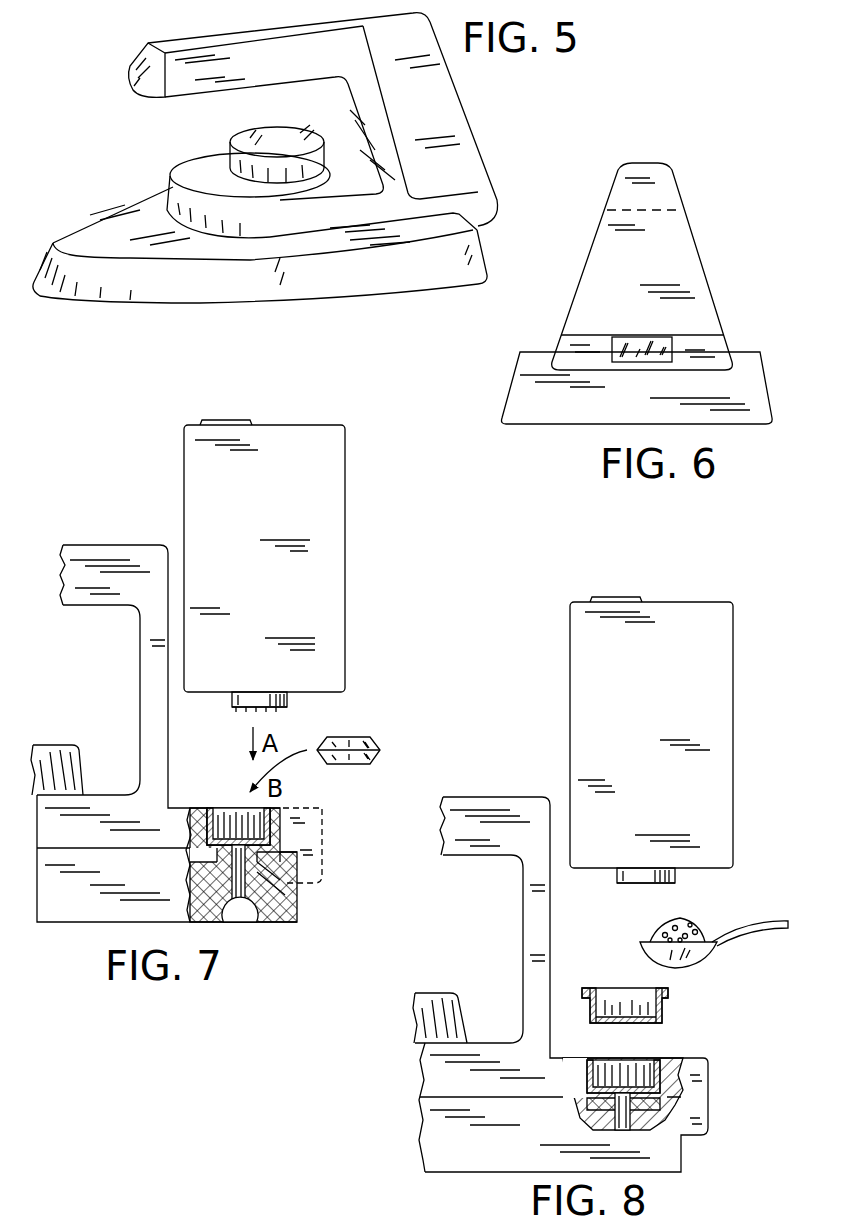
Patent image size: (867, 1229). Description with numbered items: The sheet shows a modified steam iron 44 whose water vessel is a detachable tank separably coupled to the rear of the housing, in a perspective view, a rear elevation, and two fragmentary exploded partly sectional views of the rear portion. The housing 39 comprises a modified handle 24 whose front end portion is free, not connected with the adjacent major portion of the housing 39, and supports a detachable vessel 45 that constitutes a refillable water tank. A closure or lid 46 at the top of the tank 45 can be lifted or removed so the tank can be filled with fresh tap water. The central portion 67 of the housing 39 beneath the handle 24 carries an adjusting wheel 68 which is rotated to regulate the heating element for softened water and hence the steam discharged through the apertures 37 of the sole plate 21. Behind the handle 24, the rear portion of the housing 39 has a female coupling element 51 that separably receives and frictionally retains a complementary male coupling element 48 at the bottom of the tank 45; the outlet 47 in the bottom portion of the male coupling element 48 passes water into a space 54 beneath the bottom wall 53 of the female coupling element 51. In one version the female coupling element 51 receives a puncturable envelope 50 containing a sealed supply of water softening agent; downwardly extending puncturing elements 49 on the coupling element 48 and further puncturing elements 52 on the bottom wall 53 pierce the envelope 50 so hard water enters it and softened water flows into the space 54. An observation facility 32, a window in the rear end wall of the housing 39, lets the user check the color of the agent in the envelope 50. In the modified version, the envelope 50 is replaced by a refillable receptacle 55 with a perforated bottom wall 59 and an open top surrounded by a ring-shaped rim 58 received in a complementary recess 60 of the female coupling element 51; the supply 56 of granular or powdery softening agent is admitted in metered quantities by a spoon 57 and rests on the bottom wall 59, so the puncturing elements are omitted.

In FIG. 7, the sole plate 21 is at (270, 906).
In FIG. 5, the handle 24 is at (176, 40).
In FIG. 6, the observation facility 32 is at (672, 340).
In FIG. 7, the observation facility 32 is at (330, 812).
In FIG. 7, the apertures 37 is at (242, 917).
In FIG. 5, the housing 39 is at (478, 208).
In FIG. 6, the housing 39 is at (713, 350).
In FIG. 7, the housing 39 is at (328, 854).
In FIG. 8, the housing 39 is at (712, 1085).
In FIG. 5, the steam iron 44 is at (389, 305).
In FIG. 6, the steam iron 44 is at (703, 232).
In FIG. 5, the vessel 45 is at (445, 112).
In FIG. 6, the vessel 45 is at (682, 258).
In FIG. 7, the vessel 45 is at (327, 568).
In FIG. 8, the vessel 45 is at (598, 683).
In FIG. 7, the closure 46 is at (220, 420).
In FIG. 8, the closure 46 is at (620, 597).
In FIG. 8, the outlet 47 is at (637, 883).
In FIG. 7, the male coupling element 48 is at (292, 703).
In FIG. 8, the male coupling element 48 is at (682, 875).
In FIG. 7, the puncturing elements 49 is at (232, 710).
In FIG. 7, the envelope 50 is at (386, 735).
In FIG. 7, the female coupling element 51 is at (237, 817).
In FIG. 8, the female coupling element 51 is at (657, 1058).
In FIG. 7, the puncturing elements 52 is at (245, 853).
In FIG. 7, the bottom wall 53 is at (265, 852).
In FIG. 7, the space 54 is at (277, 880).
In FIG. 8, the space 54 is at (663, 1098).
In FIG. 8, the receptacle 55 is at (675, 1008).
In FIG. 8, the supply of water softening agent 56 is at (693, 922).
In FIG. 8, the spoon 57 is at (673, 953).
In FIG. 8, the rim 58 is at (590, 988).
In FIG. 8, the perforated bottom wall 59 is at (627, 1023).
In FIG. 8, the recess 60 is at (593, 1062).
In FIG. 5, the central portion 67 is at (200, 173).
In FIG. 5, the adjusting wheel 68 is at (270, 143).